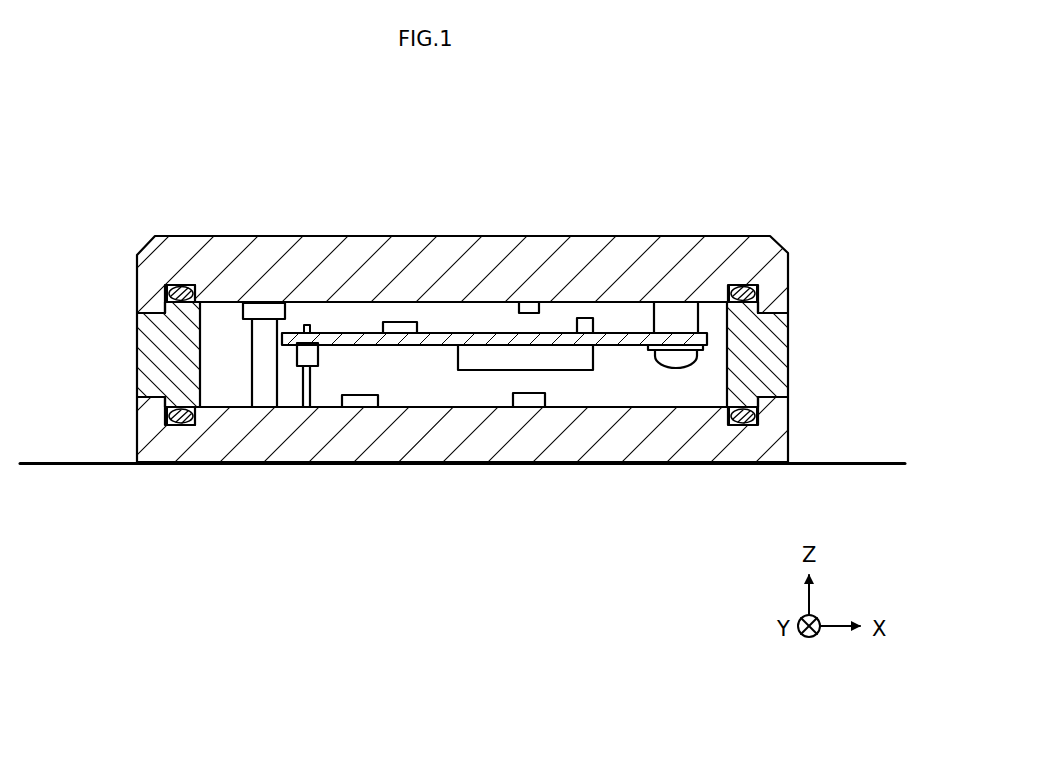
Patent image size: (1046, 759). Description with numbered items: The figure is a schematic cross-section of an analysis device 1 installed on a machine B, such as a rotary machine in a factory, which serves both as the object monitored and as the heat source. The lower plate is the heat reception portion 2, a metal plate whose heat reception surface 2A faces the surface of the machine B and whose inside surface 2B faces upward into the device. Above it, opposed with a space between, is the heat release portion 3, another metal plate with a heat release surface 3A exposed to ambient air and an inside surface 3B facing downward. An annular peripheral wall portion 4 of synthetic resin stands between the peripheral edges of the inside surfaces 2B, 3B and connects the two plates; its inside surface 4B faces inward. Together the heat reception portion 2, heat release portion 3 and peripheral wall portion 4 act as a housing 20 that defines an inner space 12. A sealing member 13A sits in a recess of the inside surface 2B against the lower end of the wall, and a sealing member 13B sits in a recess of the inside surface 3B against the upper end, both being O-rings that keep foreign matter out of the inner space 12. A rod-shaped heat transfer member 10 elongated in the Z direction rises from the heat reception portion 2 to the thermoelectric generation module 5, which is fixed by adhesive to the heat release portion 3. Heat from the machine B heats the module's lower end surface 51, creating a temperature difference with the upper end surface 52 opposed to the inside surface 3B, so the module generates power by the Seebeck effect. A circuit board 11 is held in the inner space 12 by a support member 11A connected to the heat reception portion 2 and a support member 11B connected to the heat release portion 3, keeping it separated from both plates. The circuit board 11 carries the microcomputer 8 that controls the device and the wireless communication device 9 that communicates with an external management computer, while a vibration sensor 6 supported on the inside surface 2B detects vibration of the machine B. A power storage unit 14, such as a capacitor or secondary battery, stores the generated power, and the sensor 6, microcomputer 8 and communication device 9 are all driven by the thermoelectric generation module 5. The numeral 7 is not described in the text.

The analysis device 1 is at (776, 167).
The heat reception portion 2 is at (426, 459).
The heat reception surface 2A is at (582, 463).
The inside surface 2B is at (578, 406).
The heat release portion 3 is at (490, 251).
The heat release surface 3A is at (453, 237).
The inside surface 3B is at (474, 304).
The peripheral wall portion 4 is at (463, 330).
The inside surface 4B is at (727, 372).
The thermoelectric generation module 5 is at (286, 356).
The end surface 51 is at (265, 330).
The end surface 52 is at (282, 300).
The vibration sensor 6 is at (531, 401).
The circuit board / electronic components 7 is at (530, 308).
The microcomputer 8 is at (583, 357).
The wireless communication device 9 is at (587, 327).
The heat transfer member 10 is at (253, 398).
The circuit board 11 is at (530, 356).
The support member 11A is at (308, 388).
The support member 11B is at (682, 313).
The inner space 12 is at (496, 396).
The sealing member 13A is at (758, 412).
The sealing member 13B is at (758, 292).
The power storage unit 14 is at (403, 322).
The housing 20 is at (461, 356).
The machine B is at (878, 462).